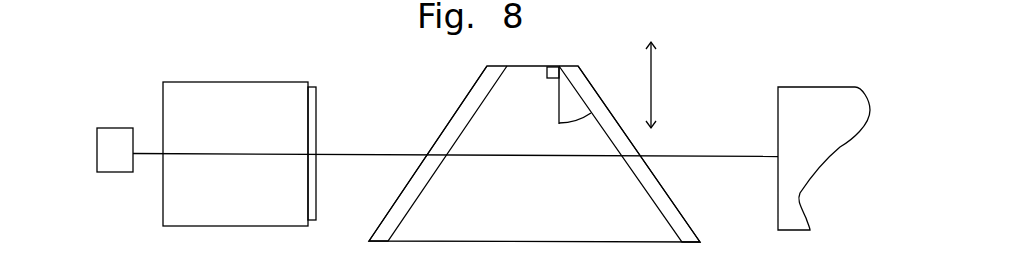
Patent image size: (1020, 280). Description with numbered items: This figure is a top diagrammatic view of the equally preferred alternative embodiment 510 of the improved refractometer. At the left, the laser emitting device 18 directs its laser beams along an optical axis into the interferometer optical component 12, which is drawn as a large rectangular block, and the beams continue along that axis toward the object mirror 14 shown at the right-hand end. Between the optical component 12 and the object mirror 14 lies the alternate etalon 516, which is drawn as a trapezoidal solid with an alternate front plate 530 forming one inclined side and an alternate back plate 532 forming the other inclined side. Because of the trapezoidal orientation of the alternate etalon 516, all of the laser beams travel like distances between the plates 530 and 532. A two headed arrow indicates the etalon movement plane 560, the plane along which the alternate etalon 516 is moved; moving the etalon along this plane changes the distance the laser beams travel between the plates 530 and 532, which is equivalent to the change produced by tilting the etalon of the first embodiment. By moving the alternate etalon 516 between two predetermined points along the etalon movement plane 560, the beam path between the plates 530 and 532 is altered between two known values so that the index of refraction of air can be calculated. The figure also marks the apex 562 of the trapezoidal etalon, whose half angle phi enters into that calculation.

The interferometer optical component 12 is at (164, 92).
The laser emitting device 18 is at (124, 160).
The object mirror 14 is at (819, 146).
The equally preferred alternative embodiment 510 is at (842, 62).
The alternate etalon 516 is at (532, 204).
The alternate front plate 530 is at (452, 133).
The alternate back plate 532 is at (627, 145).
The etalon movement plane 560 is at (652, 90).
The apex of the trapezoidal etalon 562 is at (560, 125).